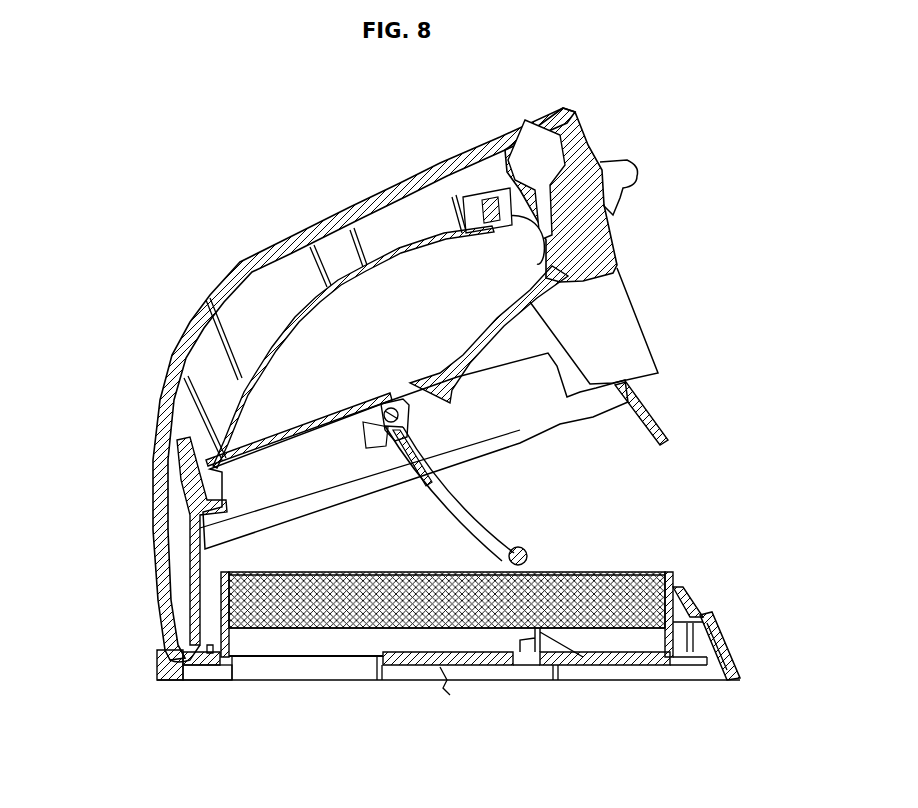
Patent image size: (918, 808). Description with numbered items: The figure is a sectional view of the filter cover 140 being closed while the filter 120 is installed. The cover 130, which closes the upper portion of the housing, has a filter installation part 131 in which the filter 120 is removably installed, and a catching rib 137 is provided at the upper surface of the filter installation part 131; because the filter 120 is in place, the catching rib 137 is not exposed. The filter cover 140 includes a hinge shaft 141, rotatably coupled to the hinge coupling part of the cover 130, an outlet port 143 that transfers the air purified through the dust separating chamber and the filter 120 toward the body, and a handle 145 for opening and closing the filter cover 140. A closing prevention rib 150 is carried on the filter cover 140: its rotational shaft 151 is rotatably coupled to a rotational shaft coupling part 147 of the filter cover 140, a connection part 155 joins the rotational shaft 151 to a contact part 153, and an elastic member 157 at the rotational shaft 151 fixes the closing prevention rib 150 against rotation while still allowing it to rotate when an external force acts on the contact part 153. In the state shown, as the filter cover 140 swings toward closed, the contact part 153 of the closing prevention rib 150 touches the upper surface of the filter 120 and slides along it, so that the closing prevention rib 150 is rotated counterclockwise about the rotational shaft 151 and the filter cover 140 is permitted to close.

The filter 120 is at (598, 572).
The cover 130 is at (481, 665).
The filter installation part 131 is at (282, 635).
The catching rib 137 is at (537, 636).
The filter cover 140 is at (349, 385).
The hinge shaft 141 is at (188, 616).
The outlet port 143 is at (612, 322).
The handle 145 is at (240, 273).
The rotational shaft coupling part 147 is at (350, 430).
The closing prevention rib 150 is at (468, 496).
The rotational shaft 151 is at (391, 405).
The contact part 153 is at (520, 546).
The connection part 155 is at (438, 522).
The elastic member 157 is at (370, 410).